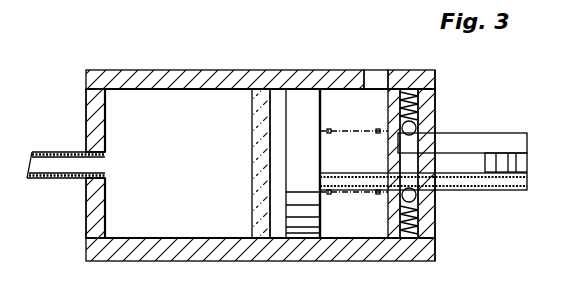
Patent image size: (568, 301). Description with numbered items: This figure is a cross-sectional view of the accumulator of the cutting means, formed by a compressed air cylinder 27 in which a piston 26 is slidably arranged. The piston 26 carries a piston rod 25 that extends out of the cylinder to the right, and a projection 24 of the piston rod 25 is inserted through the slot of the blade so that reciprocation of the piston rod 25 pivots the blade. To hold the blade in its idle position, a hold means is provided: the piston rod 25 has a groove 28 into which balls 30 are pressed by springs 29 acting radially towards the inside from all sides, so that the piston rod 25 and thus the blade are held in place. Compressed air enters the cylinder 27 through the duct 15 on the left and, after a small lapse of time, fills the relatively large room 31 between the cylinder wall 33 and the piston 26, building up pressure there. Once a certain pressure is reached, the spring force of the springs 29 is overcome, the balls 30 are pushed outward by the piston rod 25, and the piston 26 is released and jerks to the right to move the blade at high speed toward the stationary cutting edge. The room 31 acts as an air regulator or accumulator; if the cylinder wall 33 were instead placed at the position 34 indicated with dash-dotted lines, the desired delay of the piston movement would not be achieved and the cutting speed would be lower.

The duct 15 is at (40, 152).
The projection 24 is at (510, 162).
The piston rod 25 is at (460, 140).
The piston 26 is at (302, 110).
The compressed air cylinder 27 is at (200, 80).
The groove 28 is at (412, 170).
The springs 29 is at (425, 89).
The balls 30 is at (402, 134).
The room 31 is at (178, 163).
The cylinder wall 33 is at (86, 228).
The position 34 is at (258, 224).